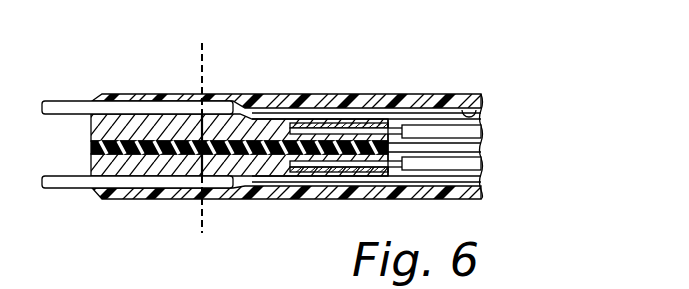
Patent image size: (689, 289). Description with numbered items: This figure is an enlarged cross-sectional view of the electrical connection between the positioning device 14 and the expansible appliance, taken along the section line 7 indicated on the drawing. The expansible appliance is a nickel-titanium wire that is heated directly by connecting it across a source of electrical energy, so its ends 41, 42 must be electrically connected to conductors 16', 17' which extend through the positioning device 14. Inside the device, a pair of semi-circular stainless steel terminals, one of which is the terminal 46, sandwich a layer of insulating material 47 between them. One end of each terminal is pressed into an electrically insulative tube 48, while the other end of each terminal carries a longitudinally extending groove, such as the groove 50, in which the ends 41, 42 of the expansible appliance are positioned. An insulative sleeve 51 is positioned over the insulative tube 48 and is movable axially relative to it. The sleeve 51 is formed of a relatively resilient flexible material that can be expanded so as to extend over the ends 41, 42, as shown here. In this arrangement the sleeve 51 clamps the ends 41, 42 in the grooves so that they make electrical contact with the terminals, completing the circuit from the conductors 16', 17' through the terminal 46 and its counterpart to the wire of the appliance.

The section line 7- 7 is at (254, 233).
The positioning device 14 is at (410, 82).
The conductor 16' is at (426, 127).
The conductor 17' is at (426, 173).
The end of expansible appliance 41 is at (50, 100).
The end of expansible appliance 42 is at (72, 189).
The semi-circular stainless steel terminal 46 is at (152, 172).
The layer of insulating material 47 is at (115, 140).
The electrically insulative tube 48 is at (481, 116).
The longitudinally extending groove 50 is at (91, 168).
The insulative sleeve 51 is at (185, 94).